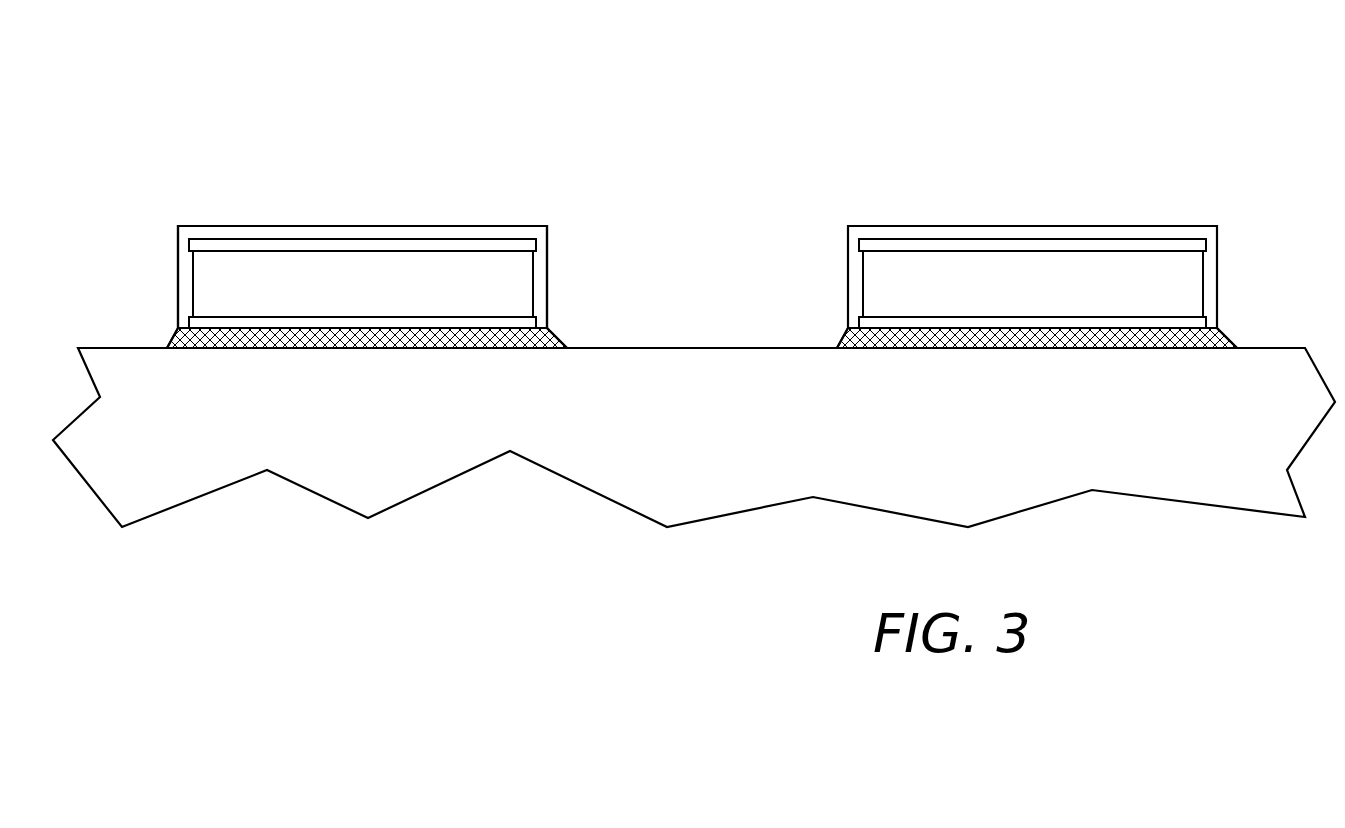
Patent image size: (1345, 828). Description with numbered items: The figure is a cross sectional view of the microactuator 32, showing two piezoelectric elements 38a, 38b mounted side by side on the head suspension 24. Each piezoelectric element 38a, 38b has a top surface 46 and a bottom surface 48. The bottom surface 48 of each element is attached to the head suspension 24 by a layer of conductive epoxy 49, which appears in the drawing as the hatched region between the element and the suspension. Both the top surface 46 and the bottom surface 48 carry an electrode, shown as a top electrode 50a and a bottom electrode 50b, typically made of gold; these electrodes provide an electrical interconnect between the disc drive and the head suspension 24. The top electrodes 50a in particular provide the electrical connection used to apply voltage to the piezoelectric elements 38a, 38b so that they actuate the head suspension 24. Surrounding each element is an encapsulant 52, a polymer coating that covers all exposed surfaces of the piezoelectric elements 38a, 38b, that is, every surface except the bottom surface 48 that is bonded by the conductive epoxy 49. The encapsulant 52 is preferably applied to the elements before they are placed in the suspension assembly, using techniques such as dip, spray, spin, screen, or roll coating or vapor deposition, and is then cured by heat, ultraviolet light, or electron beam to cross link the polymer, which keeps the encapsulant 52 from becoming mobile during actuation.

The head suspension 24 is at (635, 463).
The microactuator 32 is at (367, 120).
The piezoelectric element 38a is at (948, 278).
The piezoelectric element 38b is at (272, 275).
The top surface 46 is at (450, 247).
The bottom surface 48 is at (437, 317).
The conductive epoxy 49 is at (275, 342).
The top electrode 50a is at (345, 245).
The bottom electrode 50b is at (350, 322).
The encapsulant 52 is at (205, 232).